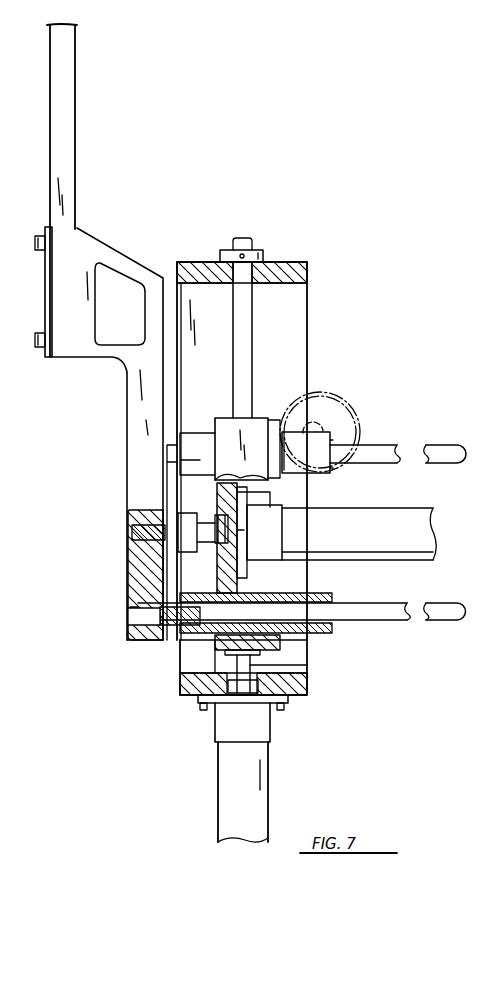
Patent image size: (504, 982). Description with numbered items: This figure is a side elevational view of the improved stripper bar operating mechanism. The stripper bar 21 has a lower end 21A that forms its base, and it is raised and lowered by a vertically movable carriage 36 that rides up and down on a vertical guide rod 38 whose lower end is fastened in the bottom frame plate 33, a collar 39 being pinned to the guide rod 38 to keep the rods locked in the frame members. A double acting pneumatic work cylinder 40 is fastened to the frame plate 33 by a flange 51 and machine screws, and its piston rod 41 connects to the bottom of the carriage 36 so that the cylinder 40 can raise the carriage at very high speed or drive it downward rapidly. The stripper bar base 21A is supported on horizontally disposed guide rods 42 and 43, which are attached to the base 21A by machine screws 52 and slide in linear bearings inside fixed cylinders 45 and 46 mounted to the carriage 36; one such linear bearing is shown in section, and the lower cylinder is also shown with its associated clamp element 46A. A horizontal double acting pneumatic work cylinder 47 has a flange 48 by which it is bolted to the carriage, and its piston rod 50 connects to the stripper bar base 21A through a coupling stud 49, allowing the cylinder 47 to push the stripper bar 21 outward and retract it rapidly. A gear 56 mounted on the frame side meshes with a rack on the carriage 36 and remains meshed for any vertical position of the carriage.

The stripper bar 21 is at (76, 109).
The lower end of stripper bar 21A is at (100, 242).
The bottom horizontally extending frame member 33 is at (308, 264).
The vertically movable carriage 36 is at (258, 424).
The vertical guide rod 38 is at (253, 304).
The collar 39 is at (265, 249).
The double acting pneumatic work cylinder 40 is at (268, 786).
The piston rod 41 is at (255, 662).
The horizontal guide rod 42 is at (434, 446).
The horizontal guide rod 43 is at (411, 624).
The fixed cylinder 45 is at (334, 476).
The fixed cylinder 46 is at (334, 594).
The clamp bracket 46A is at (306, 641).
The horizontal pneumatic work cylinder 47 is at (403, 509).
The flange 48 is at (248, 489).
The coupling stud 49 is at (130, 531).
The piston rod 50 is at (215, 548).
The flange 51 is at (198, 700).
The machine screws 52 is at (130, 596).
The gear 56 is at (349, 401).